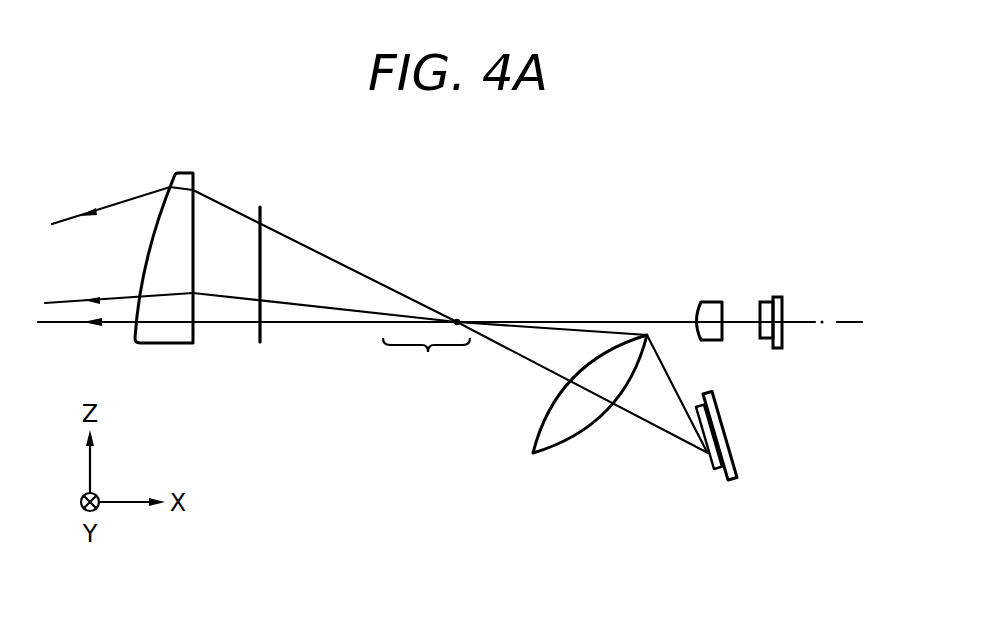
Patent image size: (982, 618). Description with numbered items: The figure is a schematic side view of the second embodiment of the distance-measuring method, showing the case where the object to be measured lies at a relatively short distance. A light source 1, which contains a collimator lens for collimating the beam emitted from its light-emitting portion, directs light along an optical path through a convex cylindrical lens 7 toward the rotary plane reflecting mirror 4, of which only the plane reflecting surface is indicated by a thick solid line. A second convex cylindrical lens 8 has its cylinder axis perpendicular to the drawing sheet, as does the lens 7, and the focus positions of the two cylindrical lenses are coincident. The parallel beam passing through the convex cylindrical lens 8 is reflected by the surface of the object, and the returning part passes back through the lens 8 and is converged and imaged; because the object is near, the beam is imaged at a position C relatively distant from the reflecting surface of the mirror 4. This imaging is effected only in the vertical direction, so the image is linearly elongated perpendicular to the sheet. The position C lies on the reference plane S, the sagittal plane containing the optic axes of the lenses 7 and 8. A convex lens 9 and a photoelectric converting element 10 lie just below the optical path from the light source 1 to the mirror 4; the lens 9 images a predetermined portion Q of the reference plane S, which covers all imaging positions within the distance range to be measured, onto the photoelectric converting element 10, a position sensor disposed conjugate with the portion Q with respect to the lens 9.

The light source 1 is at (767, 302).
The rotary plane reflecting mirror 4 is at (260, 265).
The convex cylindrical lens 7 is at (712, 302).
The convex cylindrical lens 8 is at (153, 266).
The convex lens 9 is at (570, 428).
The photoelectric converting element 10 is at (707, 468).
The imaging position C is at (458, 318).
The predetermined portion Q is at (426, 365).
The reference plane S is at (838, 320).